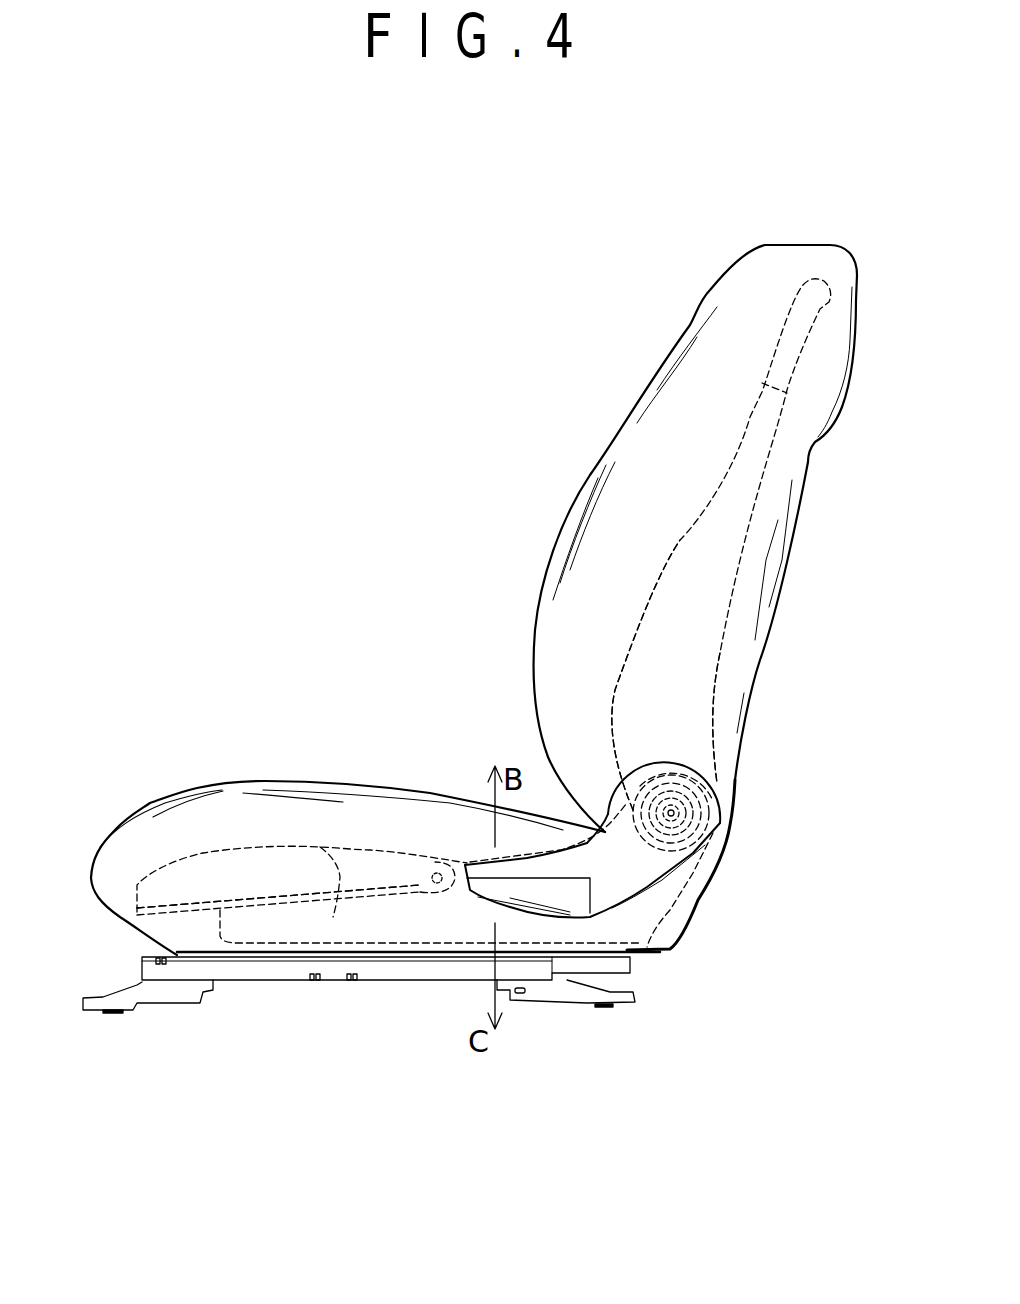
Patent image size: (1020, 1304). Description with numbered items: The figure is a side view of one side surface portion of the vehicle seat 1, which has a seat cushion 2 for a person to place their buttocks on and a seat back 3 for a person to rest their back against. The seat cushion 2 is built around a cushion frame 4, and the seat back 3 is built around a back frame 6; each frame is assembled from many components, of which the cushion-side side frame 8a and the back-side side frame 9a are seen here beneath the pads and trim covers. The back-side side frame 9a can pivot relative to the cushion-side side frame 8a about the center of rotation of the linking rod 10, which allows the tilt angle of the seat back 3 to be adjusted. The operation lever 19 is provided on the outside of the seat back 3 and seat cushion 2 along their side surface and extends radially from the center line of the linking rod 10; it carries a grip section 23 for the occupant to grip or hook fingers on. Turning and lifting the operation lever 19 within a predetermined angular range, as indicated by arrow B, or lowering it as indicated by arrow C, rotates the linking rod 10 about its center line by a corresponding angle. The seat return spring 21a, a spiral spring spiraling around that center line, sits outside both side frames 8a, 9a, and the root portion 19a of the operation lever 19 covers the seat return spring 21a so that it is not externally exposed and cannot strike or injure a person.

The vehicle seat 1 is at (511, 355).
The seat cushion 2 is at (519, 741).
The seat back 3 is at (657, 218).
The cushion frame 4 is at (388, 894).
The back frame 6 is at (721, 544).
The side frame 8a is at (345, 890).
The side frame 9a is at (693, 557).
The linking rod 10 is at (671, 813).
The operation lever 19 is at (473, 897).
The root portion 19a is at (662, 885).
The seat return spring 21a is at (697, 787).
The grip section 23 is at (557, 887).